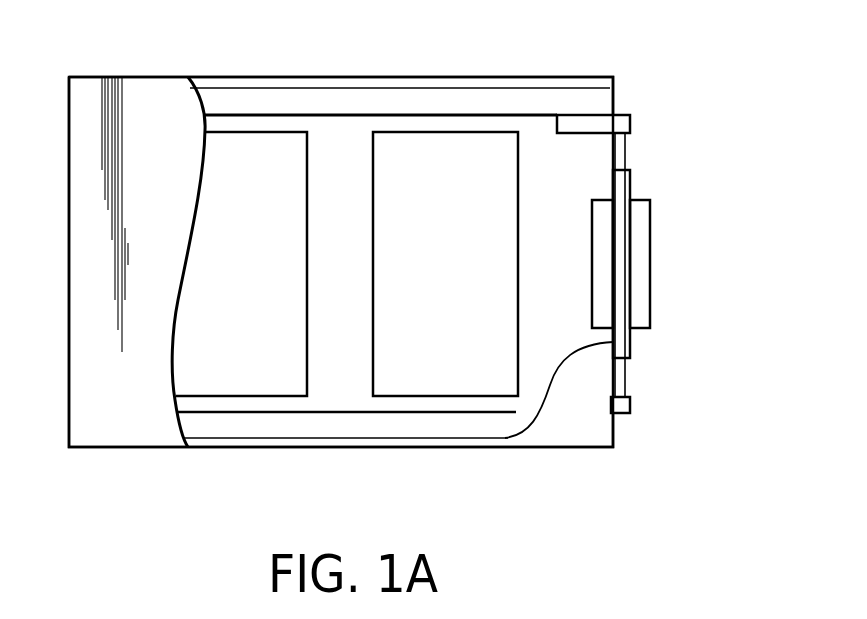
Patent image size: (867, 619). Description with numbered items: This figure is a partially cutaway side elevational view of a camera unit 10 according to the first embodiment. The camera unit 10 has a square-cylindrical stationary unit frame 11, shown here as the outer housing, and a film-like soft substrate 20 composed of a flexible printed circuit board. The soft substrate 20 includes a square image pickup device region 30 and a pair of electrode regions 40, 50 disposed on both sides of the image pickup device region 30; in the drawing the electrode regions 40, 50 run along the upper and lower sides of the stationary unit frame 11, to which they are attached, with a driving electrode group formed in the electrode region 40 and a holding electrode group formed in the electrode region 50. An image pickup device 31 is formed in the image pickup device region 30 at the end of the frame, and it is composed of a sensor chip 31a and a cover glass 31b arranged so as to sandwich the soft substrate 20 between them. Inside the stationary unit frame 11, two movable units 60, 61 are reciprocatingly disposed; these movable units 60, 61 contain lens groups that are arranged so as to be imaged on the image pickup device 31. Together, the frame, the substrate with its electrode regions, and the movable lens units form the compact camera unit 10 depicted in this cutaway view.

The camera unit 10 is at (125, 449).
The stationary unit frame 11 is at (480, 78).
The soft substrate 20 is at (612, 152).
The image pickup device region 30 is at (620, 343).
The image pickup device 31 is at (650, 295).
The sensor chip 31a is at (637, 236).
The cover glass 31b is at (602, 263).
The electrode region 40 is at (244, 92).
The electrode region 50 is at (212, 423).
The movable unit 60 is at (443, 372).
The movable unit 61 is at (277, 372).